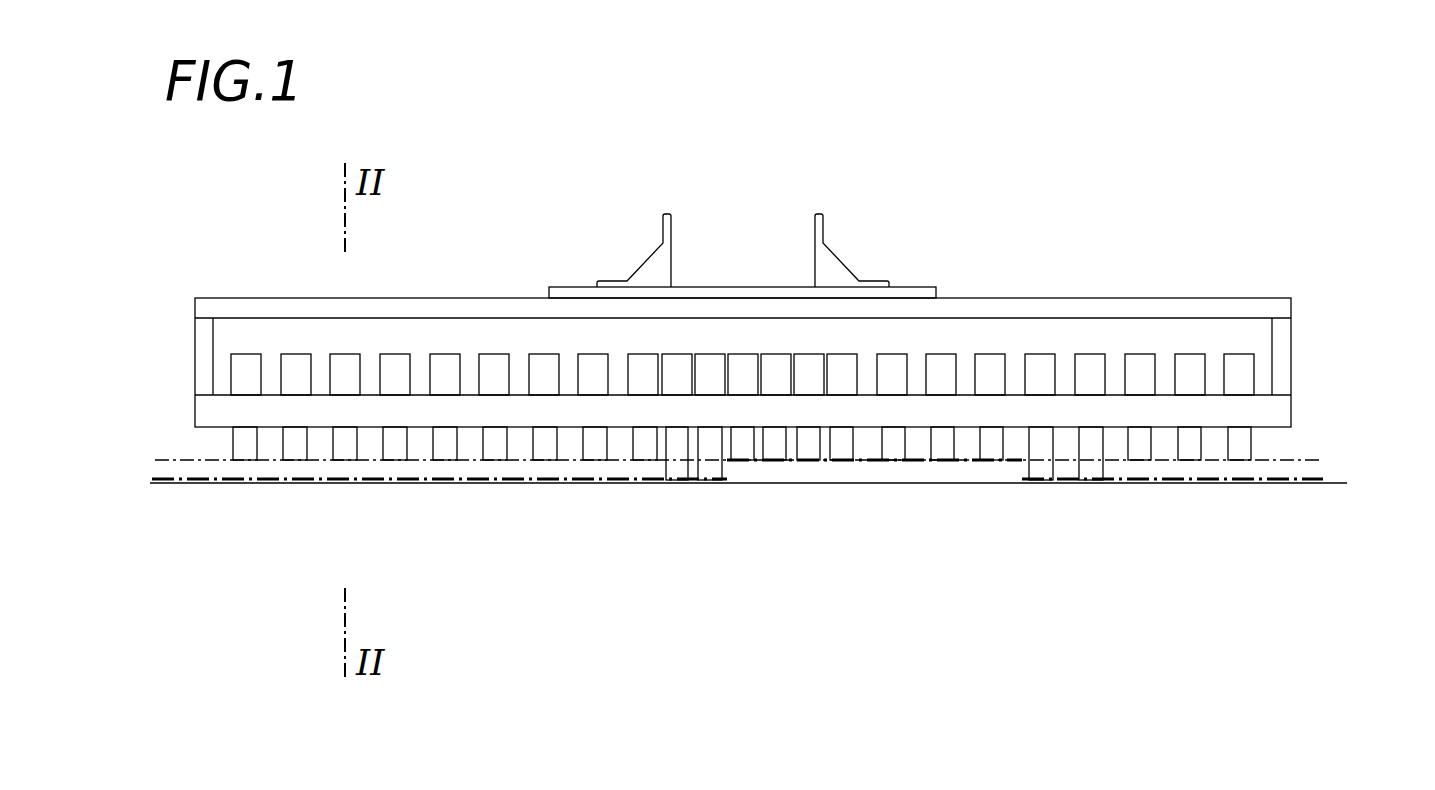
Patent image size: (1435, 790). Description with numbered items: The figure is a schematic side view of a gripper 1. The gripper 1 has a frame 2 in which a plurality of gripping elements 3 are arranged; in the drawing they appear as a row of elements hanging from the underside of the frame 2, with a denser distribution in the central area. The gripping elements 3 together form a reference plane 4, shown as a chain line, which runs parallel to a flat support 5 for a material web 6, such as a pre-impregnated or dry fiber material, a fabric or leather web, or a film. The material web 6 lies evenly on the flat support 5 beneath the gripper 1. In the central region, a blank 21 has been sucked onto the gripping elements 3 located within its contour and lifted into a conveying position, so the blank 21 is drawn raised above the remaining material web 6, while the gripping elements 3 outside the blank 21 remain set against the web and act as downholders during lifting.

The gripper 1 is at (743, 370).
The frame 2 is at (1052, 308).
The gripping elements 3 is at (295, 447).
The reference plane 4 is at (1292, 460).
The flat support 5 is at (1333, 484).
The material web 6 is at (737, 556).
The blank 21 is at (867, 463).